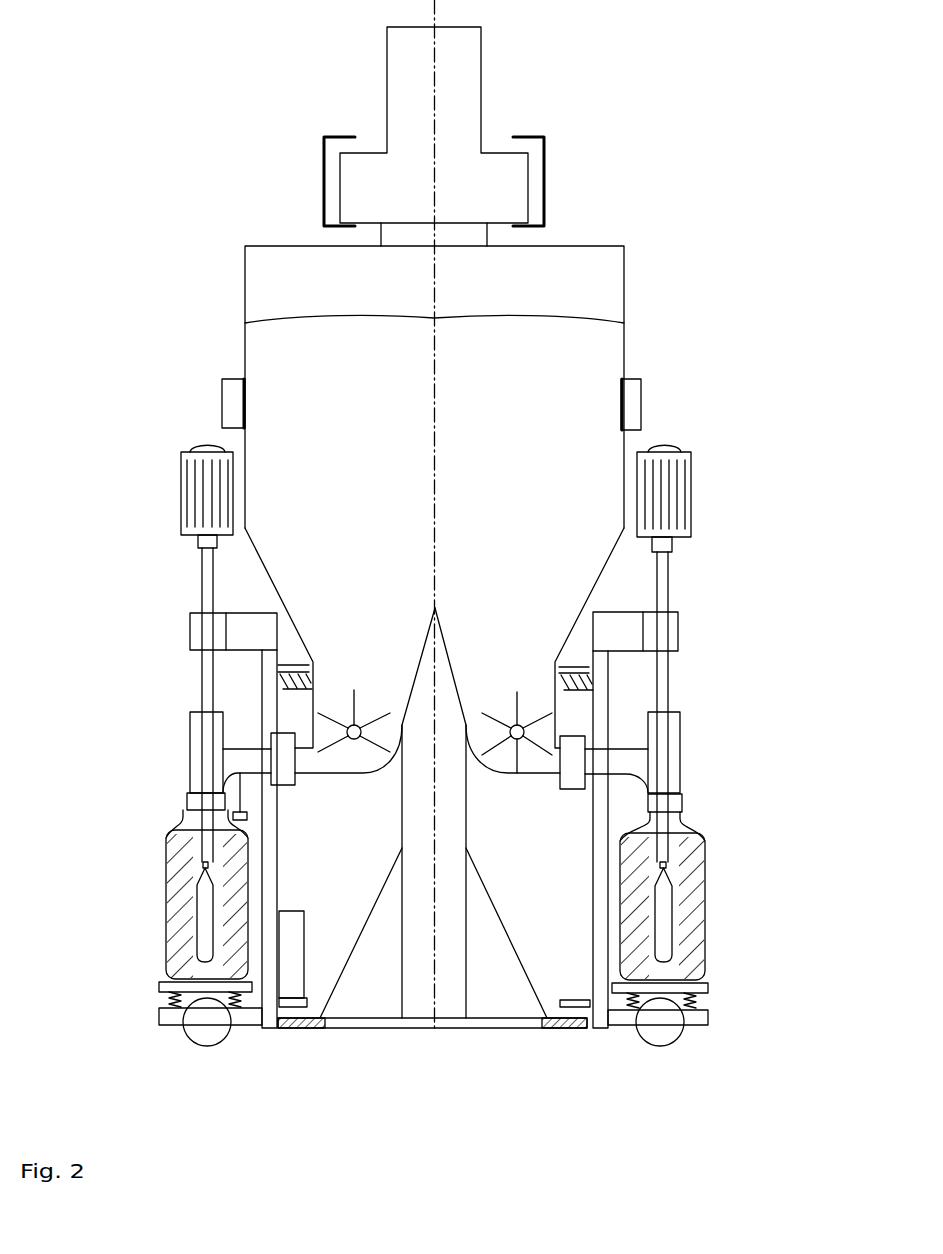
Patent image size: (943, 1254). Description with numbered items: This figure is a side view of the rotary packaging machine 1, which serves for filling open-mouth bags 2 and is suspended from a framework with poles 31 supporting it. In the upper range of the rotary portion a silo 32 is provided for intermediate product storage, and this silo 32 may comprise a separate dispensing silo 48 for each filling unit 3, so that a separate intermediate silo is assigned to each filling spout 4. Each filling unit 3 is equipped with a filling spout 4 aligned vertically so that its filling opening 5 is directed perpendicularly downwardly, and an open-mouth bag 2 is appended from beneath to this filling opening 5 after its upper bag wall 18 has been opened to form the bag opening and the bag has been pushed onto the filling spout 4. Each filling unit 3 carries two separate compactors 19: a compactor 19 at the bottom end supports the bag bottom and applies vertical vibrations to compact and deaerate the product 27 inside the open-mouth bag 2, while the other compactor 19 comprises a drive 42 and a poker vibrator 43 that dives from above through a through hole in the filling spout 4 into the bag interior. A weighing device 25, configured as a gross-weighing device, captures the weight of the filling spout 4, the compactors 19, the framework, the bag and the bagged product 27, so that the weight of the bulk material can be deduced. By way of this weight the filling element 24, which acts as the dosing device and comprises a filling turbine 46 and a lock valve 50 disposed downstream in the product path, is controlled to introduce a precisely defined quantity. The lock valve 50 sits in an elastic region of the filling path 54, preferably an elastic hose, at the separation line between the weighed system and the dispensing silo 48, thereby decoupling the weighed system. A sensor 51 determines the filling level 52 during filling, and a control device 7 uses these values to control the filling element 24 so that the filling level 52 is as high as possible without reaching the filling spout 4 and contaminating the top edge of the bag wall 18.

The rotary packaging machine 1 is at (116, 88).
The poles 31 is at (317, 118).
The silo 32 is at (564, 261).
The control device 7 is at (232, 395).
The drive 42 is at (697, 471).
The compactor 19 is at (144, 1004).
The dispensing silo 48 is at (348, 645).
The filling unit 3 is at (154, 666).
The filling path 54 is at (618, 762).
The filling spout 4 is at (187, 787).
The bag wall 18 is at (685, 797).
The filling opening 5 is at (180, 821).
The filling level 52 is at (688, 822).
The lock valve 50 is at (285, 775).
The filling turbine 46 is at (356, 740).
The sensor 51 is at (247, 816).
The filling element 24 is at (343, 815).
The product 27 is at (184, 896).
The weighing device 25 is at (292, 925).
The open-mouth bag 2 is at (161, 952).
The poker vibrator 43 is at (663, 917).